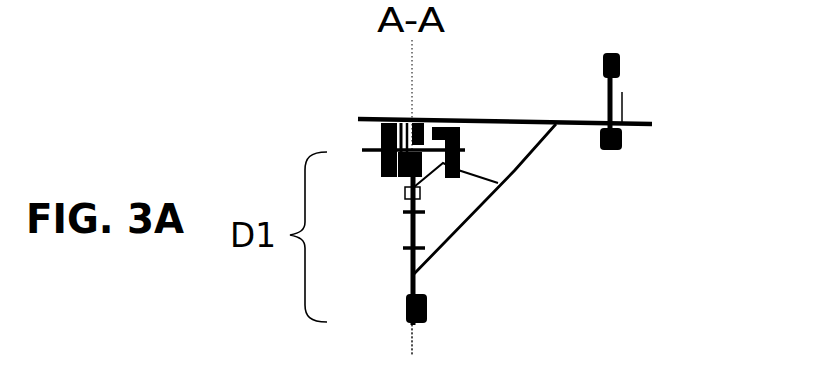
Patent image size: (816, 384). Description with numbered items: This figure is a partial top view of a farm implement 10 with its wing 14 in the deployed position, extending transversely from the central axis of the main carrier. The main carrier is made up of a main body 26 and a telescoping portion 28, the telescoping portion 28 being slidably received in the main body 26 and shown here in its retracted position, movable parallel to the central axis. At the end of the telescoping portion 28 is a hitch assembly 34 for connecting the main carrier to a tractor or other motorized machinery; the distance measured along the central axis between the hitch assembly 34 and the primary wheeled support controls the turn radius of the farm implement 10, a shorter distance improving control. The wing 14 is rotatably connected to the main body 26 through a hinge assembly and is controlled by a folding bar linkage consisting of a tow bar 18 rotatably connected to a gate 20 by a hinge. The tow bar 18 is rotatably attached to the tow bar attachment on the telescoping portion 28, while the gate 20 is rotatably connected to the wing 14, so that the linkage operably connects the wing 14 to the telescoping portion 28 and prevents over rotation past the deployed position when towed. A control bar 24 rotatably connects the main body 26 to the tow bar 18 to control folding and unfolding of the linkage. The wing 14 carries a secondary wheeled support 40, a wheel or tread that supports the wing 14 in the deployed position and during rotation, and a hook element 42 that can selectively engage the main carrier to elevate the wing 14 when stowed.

The farm implement 10 is at (338, 108).
The wing 14 is at (528, 117).
The tow bar 18 is at (445, 245).
The gate 20 is at (528, 151).
The control bar 24 is at (412, 190).
The main body 26 is at (411, 226).
The telescoping portion 28 is at (412, 350).
The hitch assembly 34 is at (415, 325).
The secondary wheeled support 40 is at (611, 57).
The hook element 42 is at (617, 152).